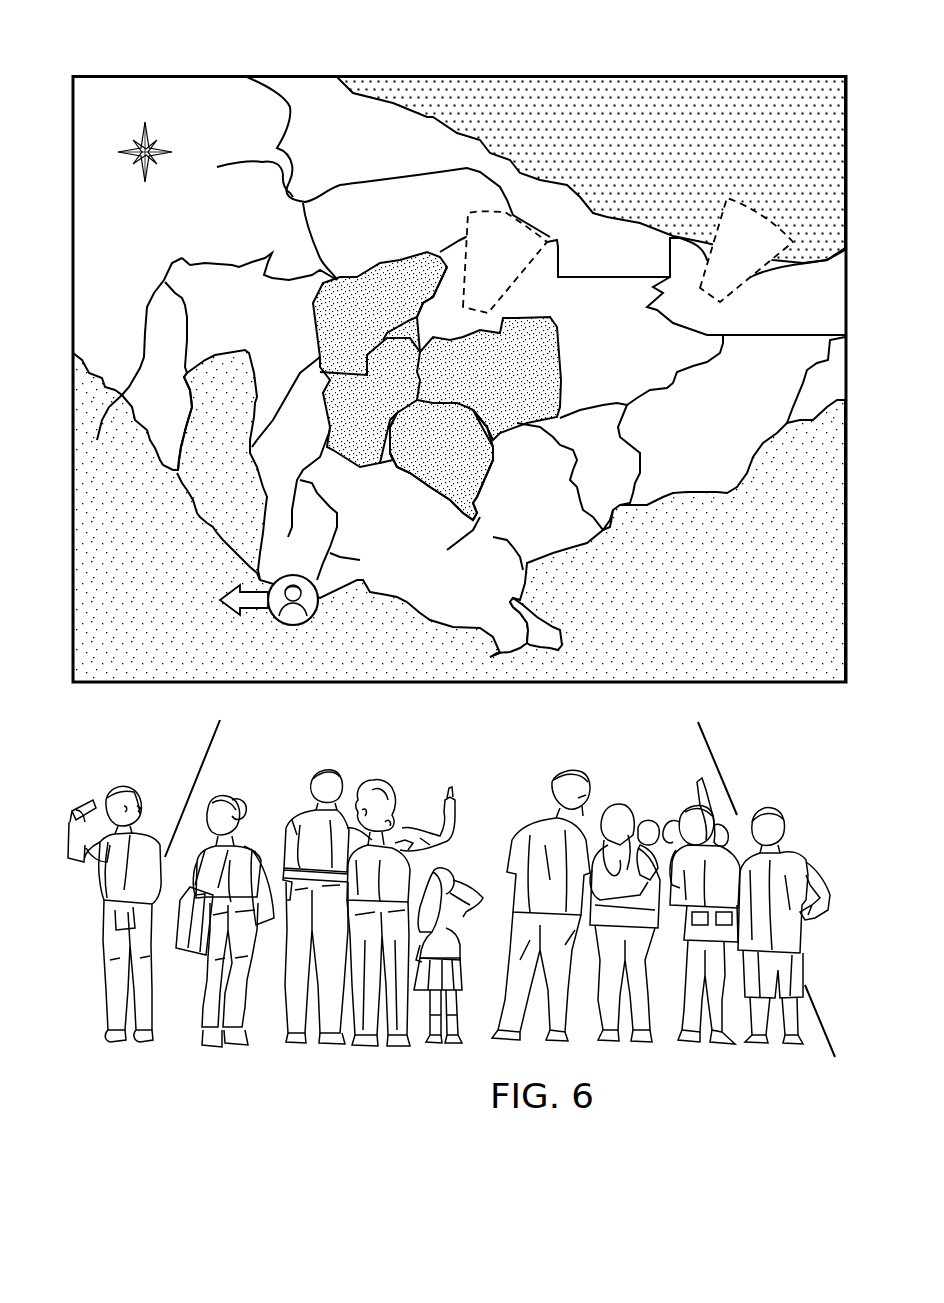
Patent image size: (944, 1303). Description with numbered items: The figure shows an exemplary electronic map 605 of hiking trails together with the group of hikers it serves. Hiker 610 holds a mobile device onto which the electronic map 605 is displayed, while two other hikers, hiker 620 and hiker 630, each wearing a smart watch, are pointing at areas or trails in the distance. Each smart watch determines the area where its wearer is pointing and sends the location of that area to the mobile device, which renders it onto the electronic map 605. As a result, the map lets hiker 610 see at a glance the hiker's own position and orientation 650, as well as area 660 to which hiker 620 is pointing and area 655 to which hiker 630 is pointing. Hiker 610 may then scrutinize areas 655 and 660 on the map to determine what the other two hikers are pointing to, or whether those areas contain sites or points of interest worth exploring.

The electronic map 605 is at (291, 68).
The hiker 610 is at (125, 1046).
The hiker 620 is at (375, 1048).
The hiker 630 is at (715, 1046).
The position and orientation 650 is at (290, 626).
The area 655 is at (750, 273).
The area 660 is at (523, 280).